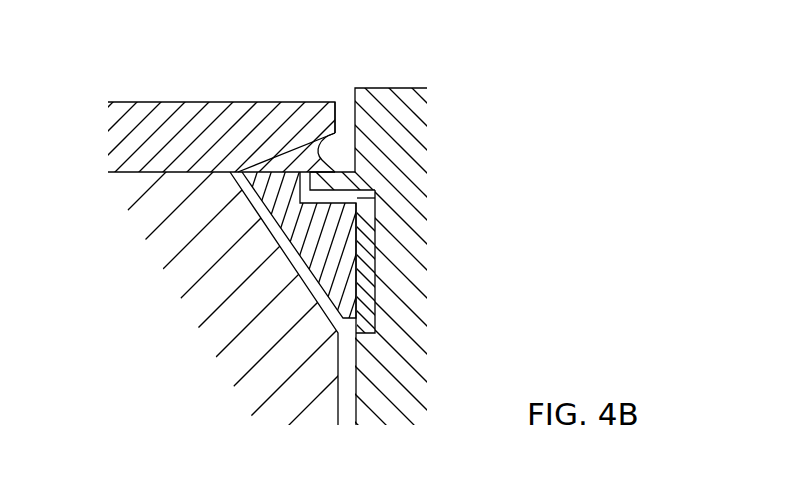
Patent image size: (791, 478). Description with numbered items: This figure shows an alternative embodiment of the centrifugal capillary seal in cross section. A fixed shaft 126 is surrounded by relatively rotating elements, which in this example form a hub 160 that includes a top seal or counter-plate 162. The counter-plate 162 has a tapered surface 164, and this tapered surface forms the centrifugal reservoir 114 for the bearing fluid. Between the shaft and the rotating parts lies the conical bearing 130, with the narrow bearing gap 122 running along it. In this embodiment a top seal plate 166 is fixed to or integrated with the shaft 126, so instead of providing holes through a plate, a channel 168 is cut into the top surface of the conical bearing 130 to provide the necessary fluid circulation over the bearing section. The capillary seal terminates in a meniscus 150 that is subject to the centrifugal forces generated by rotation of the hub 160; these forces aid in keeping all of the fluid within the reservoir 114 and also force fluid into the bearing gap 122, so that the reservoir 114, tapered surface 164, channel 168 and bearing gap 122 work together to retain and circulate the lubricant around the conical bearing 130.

The centrifugal reservoir 114 is at (268, 163).
The bearing gap 122 is at (297, 267).
The fixed shaft 126 is at (395, 239).
The conical bearing 130 is at (305, 239).
The meniscus 150 is at (322, 158).
The hub 160 is at (213, 298).
The counter-plate 162 is at (239, 239).
The tapered surface 164 is at (238, 171).
The top seal plate 166 is at (350, 186).
The channel 168 is at (355, 195).